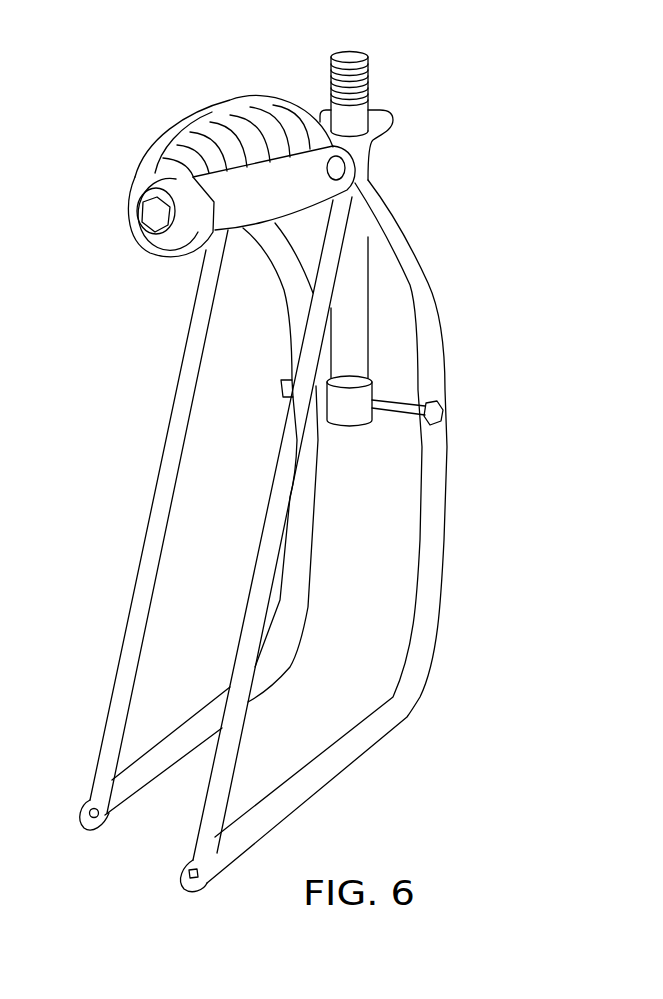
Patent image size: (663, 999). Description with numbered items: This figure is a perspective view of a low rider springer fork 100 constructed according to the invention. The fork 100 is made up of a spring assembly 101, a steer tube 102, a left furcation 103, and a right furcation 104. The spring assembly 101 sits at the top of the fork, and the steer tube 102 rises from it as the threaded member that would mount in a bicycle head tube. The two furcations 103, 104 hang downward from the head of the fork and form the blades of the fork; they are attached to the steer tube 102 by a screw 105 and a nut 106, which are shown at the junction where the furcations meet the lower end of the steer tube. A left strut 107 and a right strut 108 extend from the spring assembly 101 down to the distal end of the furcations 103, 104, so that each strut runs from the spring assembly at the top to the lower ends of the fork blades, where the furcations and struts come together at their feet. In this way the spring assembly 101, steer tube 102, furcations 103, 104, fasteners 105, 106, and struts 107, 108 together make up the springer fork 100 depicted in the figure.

The low rider springer fork 100 is at (478, 347).
The spring assembly 101 is at (172, 95).
The steer tube 102 is at (358, 280).
The left furcation 103 is at (440, 550).
The right furcation 104 is at (307, 527).
The screw 105 is at (445, 416).
The nut 106 is at (285, 385).
The left strut 107 is at (260, 577).
The right strut 108 is at (145, 552).